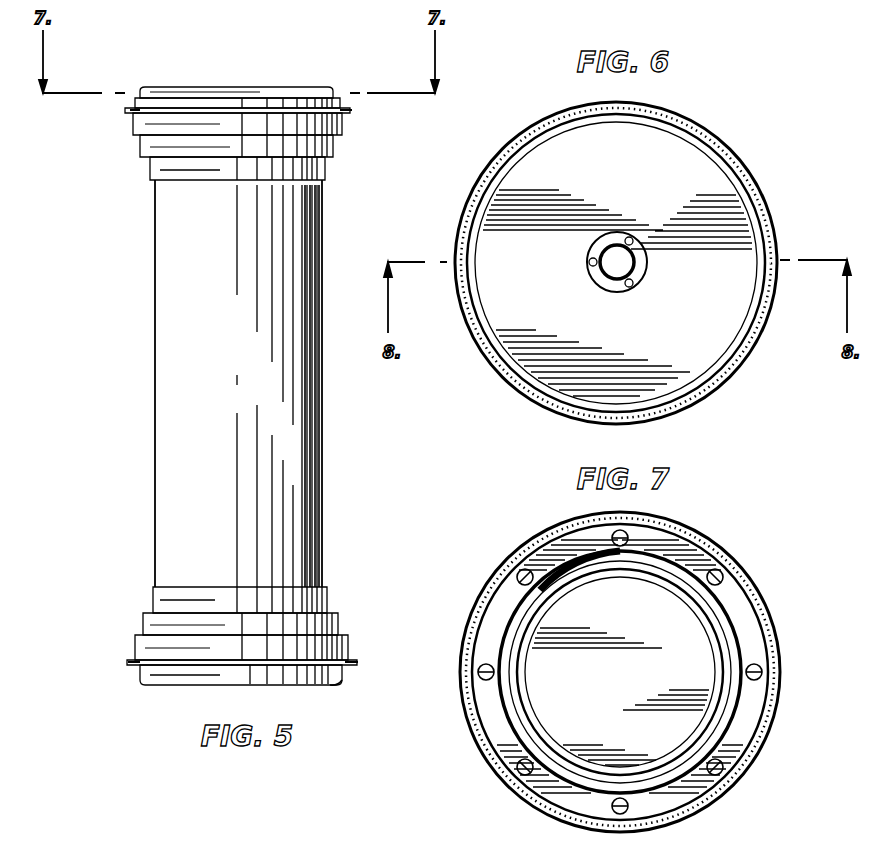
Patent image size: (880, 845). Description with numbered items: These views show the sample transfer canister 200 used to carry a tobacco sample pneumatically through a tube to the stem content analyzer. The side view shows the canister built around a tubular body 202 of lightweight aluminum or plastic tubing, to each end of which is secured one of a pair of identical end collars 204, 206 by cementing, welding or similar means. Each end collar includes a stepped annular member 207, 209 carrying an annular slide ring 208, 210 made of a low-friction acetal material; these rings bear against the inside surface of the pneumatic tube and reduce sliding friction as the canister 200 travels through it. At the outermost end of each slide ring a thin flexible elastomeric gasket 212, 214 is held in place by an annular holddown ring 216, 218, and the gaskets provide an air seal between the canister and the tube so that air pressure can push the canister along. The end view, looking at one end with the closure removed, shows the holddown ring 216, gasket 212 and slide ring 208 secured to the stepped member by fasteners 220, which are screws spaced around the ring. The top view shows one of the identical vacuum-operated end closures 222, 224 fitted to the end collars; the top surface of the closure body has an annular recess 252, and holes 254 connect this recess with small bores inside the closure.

In FIG. 5, the sample transfer canister 200 is at (110, 328).
In FIG. 5, the tubular body 202 is at (165, 387).
In FIG. 5, the end collar 204 is at (125, 170).
In FIG. 5, the end collar 206 is at (365, 607).
In FIG. 5, the stepped annular member 207 is at (325, 170).
In FIG. 5, the annular slide ring 208 is at (149, 123).
In FIG. 5, the stepped annular member 209 is at (172, 600).
In FIG. 5, the annular slide ring 210 is at (150, 648).
In FIG. 5, the annular gasket 212 is at (350, 110).
In FIG. 6, the annular gasket 212 is at (715, 152).
In FIG. 7, the annular gasket 212 is at (770, 622).
In FIG. 5, the annular gasket 214 is at (132, 663).
In FIG. 5, the annular holddown ring 216 is at (276, 100).
In FIG. 6, the annular holddown ring 216 is at (745, 188).
In FIG. 7, the annular holddown ring 216 is at (685, 553).
In FIG. 5, the annular holddown ring 218 is at (340, 678).
In FIG. 7, the fasteners 220 is at (497, 575).
In FIG. 5, the end closure 222 is at (221, 87).
In FIG. 6, the end closure 222 is at (616, 263).
In FIG. 5, the end closure 224 is at (170, 686).
In FIG. 6, the annular recess 252 is at (647, 258).
In FIG. 6, the holes 254 is at (590, 262).